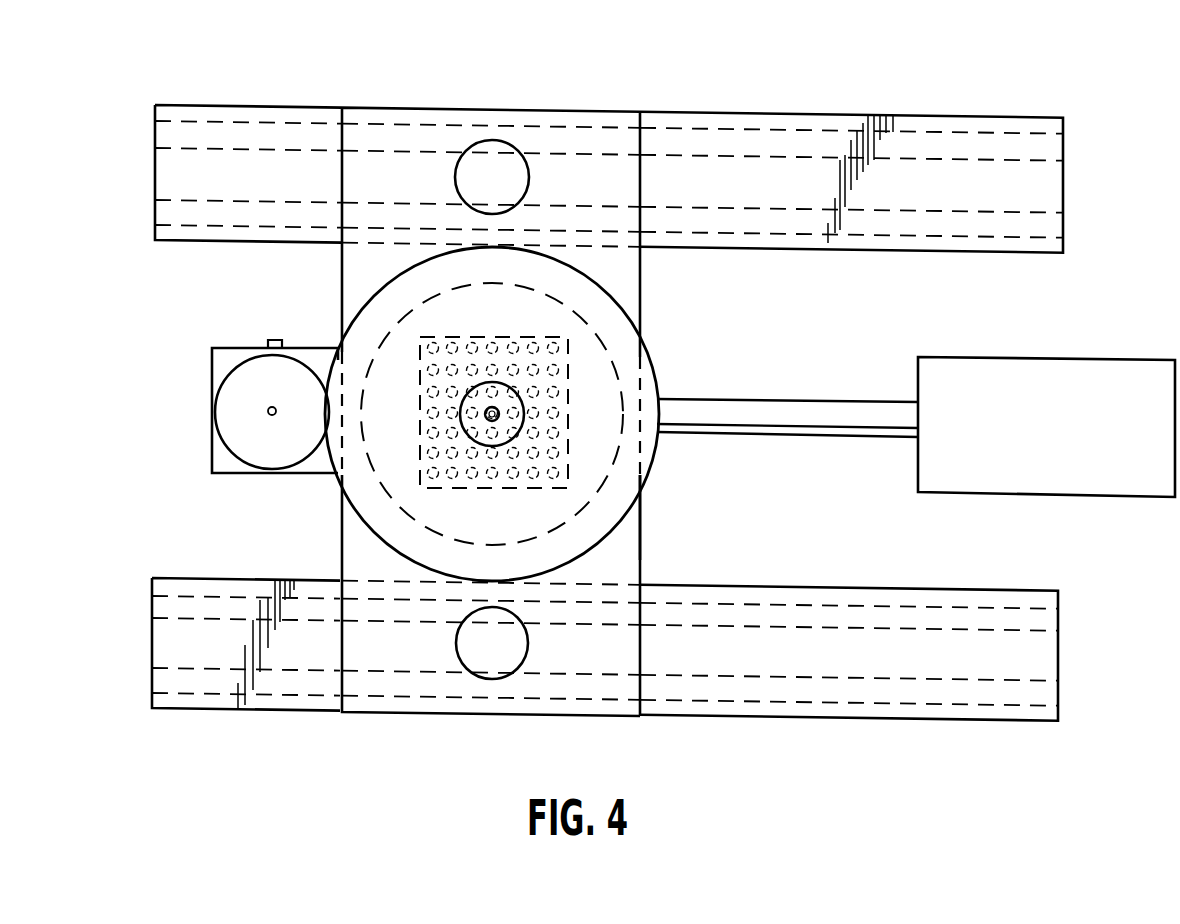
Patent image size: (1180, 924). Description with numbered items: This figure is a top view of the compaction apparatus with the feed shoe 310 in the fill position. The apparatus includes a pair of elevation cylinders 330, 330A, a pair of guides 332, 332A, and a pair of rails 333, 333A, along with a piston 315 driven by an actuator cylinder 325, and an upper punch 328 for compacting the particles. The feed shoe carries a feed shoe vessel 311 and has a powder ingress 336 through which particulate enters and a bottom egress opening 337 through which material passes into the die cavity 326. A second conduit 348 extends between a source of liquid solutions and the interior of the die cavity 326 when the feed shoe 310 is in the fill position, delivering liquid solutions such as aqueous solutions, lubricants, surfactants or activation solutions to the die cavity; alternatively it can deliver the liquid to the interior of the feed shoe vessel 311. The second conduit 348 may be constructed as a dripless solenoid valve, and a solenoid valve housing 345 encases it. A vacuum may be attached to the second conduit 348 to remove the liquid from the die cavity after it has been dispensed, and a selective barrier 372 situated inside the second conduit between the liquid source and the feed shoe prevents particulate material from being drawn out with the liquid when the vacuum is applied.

The feed shoe 310 is at (640, 548).
The feed shoe vessel 311 is at (607, 453).
The piston 315 is at (822, 412).
The actuator cylinder 325 is at (1095, 380).
The die cavity 326 is at (420, 455).
The upper punch 328 is at (392, 280).
The elevation cylinder 330 is at (492, 157).
The elevation cylinder 330A is at (527, 645).
The guide 332 is at (597, 140).
The guide 332A is at (408, 655).
The rail 333 is at (1052, 182).
The rail 333A is at (1046, 693).
The powder ingress 336 is at (527, 414).
The bottom egress opening 337 is at (493, 413).
The solenoid valve housing 345 is at (218, 362).
The second conduit 348 is at (278, 340).
The selective barrier 372 is at (270, 407).